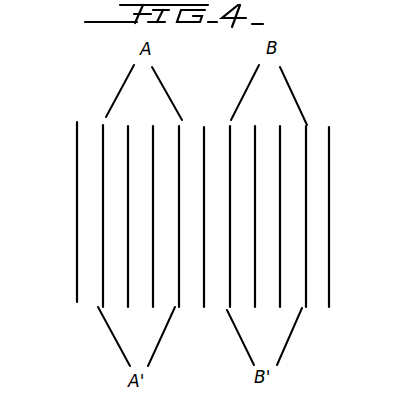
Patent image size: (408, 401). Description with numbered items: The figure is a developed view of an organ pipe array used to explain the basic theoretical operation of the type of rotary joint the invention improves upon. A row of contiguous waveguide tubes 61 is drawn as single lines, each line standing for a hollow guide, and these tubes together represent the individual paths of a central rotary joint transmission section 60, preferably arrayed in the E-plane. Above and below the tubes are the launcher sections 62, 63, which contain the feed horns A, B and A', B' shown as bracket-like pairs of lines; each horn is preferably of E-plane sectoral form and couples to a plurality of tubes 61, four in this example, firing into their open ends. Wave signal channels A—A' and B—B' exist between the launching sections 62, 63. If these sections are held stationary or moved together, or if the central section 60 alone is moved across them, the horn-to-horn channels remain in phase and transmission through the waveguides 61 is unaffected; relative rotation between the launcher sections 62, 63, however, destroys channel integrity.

The central rotary joint transmission section 60 is at (72, 226).
The waveguide tube 61 is at (90, 297).
The launcher section 62 is at (99, 99).
The launcher section 63 is at (219, 350).